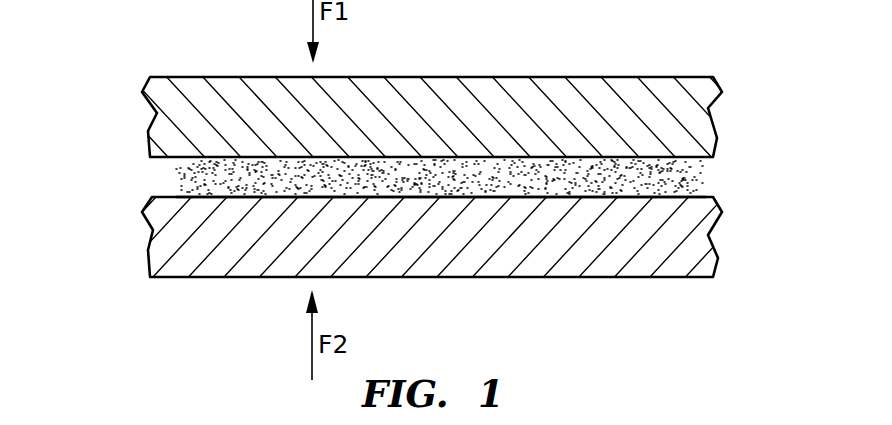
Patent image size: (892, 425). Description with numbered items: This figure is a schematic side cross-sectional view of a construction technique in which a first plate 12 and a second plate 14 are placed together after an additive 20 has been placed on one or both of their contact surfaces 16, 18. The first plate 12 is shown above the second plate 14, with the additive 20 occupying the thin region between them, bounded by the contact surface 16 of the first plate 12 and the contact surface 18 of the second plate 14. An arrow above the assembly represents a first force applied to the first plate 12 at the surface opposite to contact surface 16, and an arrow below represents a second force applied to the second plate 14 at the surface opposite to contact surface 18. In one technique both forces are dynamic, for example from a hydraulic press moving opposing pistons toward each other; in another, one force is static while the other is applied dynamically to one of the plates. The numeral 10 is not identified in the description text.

The laminated assembly 10 is at (753, 418).
The first plate 12 is at (160, 122).
The second plate 14 is at (160, 242).
The contact surface 16 is at (167, 157).
The contact surface 18 is at (698, 195).
The additive 20 is at (736, 175).